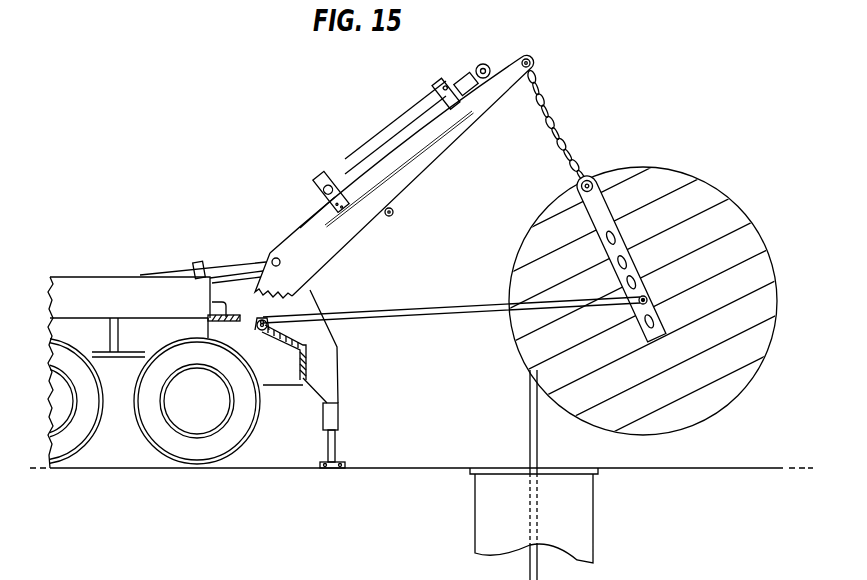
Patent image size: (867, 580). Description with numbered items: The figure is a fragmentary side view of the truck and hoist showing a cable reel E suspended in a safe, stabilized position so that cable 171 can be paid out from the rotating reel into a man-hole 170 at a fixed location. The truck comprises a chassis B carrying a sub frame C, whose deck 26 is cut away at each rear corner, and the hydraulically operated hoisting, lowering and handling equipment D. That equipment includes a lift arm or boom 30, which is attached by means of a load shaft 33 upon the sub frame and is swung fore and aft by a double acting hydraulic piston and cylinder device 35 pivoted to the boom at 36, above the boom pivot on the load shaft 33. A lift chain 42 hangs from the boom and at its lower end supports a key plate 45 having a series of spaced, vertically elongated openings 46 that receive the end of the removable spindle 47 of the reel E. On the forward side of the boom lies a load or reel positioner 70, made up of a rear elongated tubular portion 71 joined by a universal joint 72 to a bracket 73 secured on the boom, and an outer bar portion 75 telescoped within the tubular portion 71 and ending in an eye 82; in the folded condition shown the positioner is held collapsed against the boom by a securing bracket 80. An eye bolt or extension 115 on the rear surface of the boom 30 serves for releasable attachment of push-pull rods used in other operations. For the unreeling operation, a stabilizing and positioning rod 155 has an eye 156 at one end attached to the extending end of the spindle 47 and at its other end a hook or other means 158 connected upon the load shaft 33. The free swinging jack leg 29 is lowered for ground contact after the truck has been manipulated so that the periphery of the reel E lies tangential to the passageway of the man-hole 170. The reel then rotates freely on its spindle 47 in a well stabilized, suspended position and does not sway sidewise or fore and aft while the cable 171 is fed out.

The sub frame C is at (92, 288).
The chassis B is at (122, 377).
The double acting hydraulic piston and cylinder device 35 is at (236, 240).
The deck 26 is at (212, 297).
The hydraulic operating, hoisting, lowering and handling equipment D is at (394, 176).
The lift arm or boom 30 is at (413, 179).
The pivot 36 is at (281, 261).
The eye bolt or extension 115 is at (393, 215).
The load positioner 70 is at (407, 113).
The rear elongated tubular portion 71 is at (389, 141).
The universal joint 72 is at (337, 170).
The bracket 73 is at (325, 201).
The securing bracket 80 is at (447, 85).
The outer bar portion 75 is at (478, 63).
The eye 82 is at (532, 58).
The lift chain 42 is at (556, 120).
The reel E is at (750, 246).
The key plate 45 is at (627, 253).
The vertically elongated openings 46 is at (606, 254).
The eye 156 is at (647, 283).
The spindle or shaft 47 is at (650, 299).
The stabilizing and positioning rod 155 is at (458, 308).
The load shaft 33 is at (262, 333).
The hook 158 is at (283, 318).
The jack leg 29 is at (341, 408).
The cable 171 is at (530, 433).
The man-hole 170 is at (594, 517).